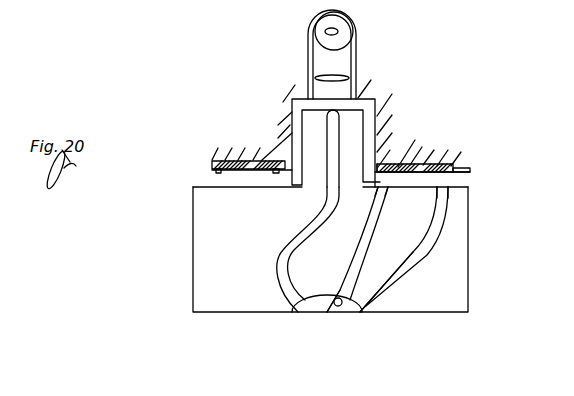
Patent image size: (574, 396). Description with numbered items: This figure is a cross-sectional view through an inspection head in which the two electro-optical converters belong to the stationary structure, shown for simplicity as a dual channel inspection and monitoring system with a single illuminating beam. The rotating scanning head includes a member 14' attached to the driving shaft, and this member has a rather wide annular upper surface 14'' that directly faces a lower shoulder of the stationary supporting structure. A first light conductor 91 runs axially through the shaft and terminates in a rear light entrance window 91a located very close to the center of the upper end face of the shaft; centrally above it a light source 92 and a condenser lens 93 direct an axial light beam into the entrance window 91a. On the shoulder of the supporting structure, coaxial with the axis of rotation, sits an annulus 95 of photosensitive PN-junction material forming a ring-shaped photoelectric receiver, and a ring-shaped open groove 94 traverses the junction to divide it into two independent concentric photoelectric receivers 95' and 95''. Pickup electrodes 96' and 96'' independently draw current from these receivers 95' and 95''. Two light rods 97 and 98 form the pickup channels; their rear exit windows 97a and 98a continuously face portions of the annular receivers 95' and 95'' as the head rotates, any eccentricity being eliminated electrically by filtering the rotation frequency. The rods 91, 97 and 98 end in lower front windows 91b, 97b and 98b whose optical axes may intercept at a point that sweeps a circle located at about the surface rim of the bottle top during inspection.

The member 14' is at (352, 249).
The upper surface 14'' is at (362, 197).
The first light conductor 91 is at (288, 243).
The light entrance window 91a is at (333, 112).
The lower front window 91b is at (300, 314).
The light source 92 is at (343, 24).
The condenser lens 93 is at (338, 73).
The ring-shaped open groove 94 is at (240, 170).
The annulus 95 is at (447, 146).
The photoelectric receiver 95' is at (485, 167).
The photoelectric receiver 95'' is at (414, 149).
The pickup electrode 96' is at (189, 174).
The pickup electrode 96'' is at (292, 190).
The light rod 97 is at (411, 263).
The rear exit window 97a is at (443, 198).
The lower front window 97b is at (352, 315).
The light rod 98 is at (360, 249).
The rear exit window 98a is at (378, 190).
The lower front window 98b is at (328, 314).